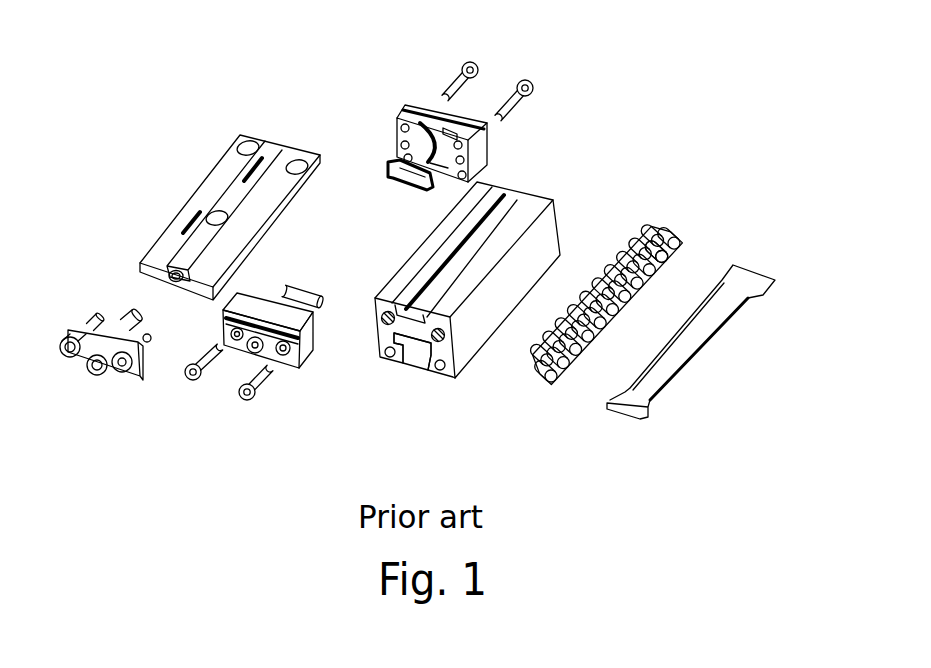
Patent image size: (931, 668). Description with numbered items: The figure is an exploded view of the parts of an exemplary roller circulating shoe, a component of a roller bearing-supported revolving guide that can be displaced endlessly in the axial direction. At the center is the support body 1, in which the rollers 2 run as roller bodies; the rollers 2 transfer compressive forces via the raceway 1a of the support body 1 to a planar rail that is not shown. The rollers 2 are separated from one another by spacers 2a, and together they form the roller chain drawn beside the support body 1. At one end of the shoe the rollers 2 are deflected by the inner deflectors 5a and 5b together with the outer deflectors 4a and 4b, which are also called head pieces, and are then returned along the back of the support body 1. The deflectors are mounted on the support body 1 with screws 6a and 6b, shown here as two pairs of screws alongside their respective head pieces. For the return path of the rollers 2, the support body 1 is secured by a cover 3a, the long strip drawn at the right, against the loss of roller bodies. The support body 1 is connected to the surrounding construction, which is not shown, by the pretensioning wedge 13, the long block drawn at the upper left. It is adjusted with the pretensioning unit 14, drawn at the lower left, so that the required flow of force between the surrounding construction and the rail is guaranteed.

The support body 1 is at (497, 221).
The raceway 1a is at (438, 300).
The rollers 2 is at (657, 229).
The spacers 2a is at (667, 233).
The cover 3a is at (743, 288).
The outer deflector 4a is at (303, 368).
The outer deflector 4b is at (400, 118).
The inner deflector 5a is at (310, 298).
The inner deflector 5b is at (393, 164).
The screws 6a is at (262, 382).
The screws 6b is at (523, 82).
The pretensioning wedge 13 is at (210, 194).
The pretensioning unit 14 is at (100, 377).